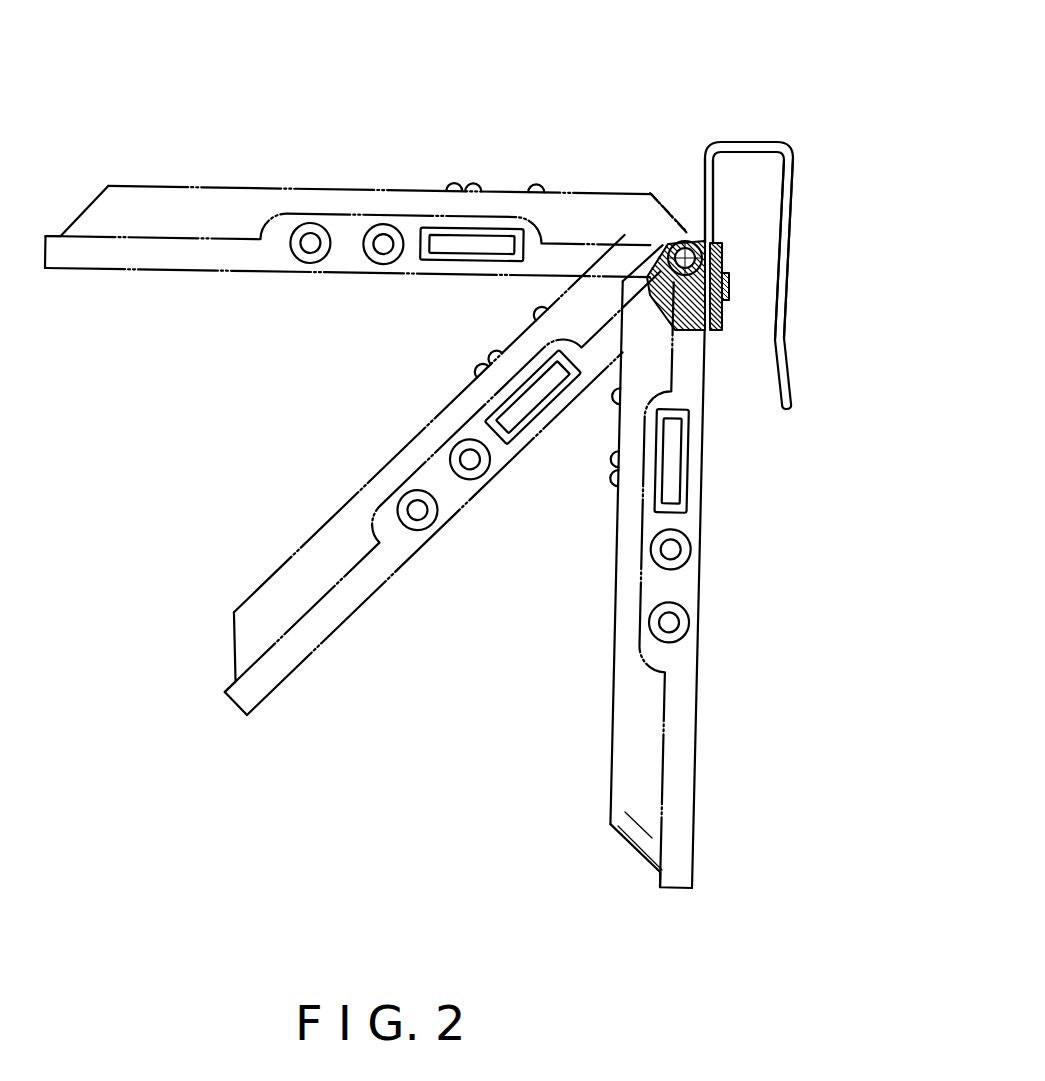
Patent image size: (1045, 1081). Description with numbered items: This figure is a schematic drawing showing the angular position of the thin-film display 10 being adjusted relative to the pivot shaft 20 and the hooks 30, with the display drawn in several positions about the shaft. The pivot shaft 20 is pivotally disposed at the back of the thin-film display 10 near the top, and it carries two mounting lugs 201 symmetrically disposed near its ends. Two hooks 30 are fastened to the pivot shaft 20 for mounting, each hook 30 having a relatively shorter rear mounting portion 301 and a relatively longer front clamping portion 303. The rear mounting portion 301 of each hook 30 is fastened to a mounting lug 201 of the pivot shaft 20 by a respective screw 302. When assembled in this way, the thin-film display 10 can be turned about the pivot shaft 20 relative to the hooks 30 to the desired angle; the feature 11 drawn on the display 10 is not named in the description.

The thin-film display 10 is at (640, 664).
The recess with mounting holes 11 is at (692, 528).
The pivot shaft 20 is at (688, 236).
The mounting lug 201 is at (722, 318).
The hook 30 is at (770, 122).
The rear mounting portion 301 is at (714, 207).
The screw 302 is at (730, 286).
The front clamping portion 303 is at (795, 198).